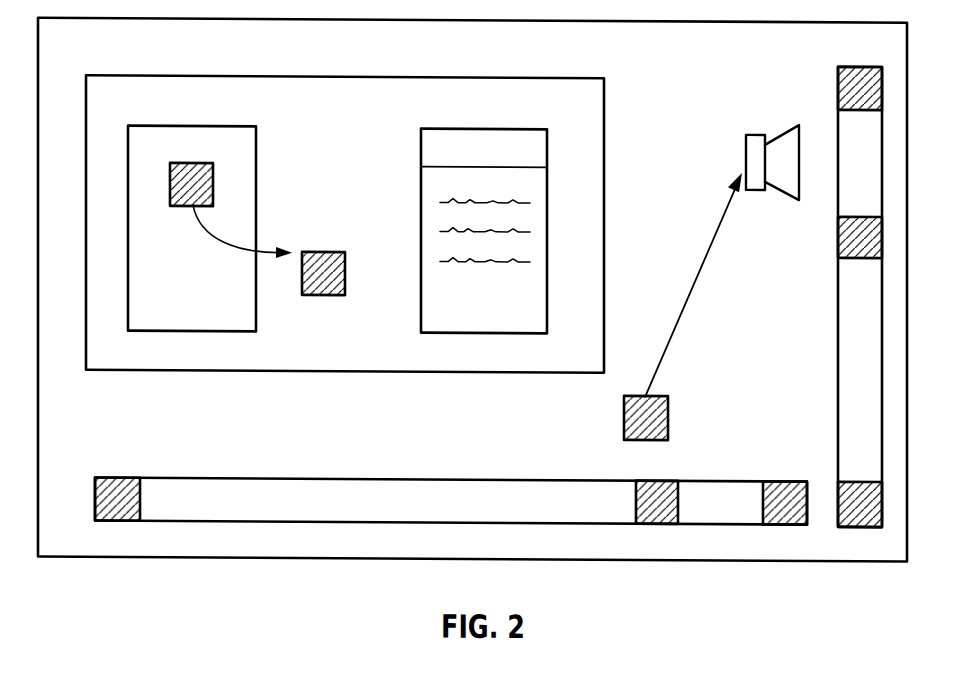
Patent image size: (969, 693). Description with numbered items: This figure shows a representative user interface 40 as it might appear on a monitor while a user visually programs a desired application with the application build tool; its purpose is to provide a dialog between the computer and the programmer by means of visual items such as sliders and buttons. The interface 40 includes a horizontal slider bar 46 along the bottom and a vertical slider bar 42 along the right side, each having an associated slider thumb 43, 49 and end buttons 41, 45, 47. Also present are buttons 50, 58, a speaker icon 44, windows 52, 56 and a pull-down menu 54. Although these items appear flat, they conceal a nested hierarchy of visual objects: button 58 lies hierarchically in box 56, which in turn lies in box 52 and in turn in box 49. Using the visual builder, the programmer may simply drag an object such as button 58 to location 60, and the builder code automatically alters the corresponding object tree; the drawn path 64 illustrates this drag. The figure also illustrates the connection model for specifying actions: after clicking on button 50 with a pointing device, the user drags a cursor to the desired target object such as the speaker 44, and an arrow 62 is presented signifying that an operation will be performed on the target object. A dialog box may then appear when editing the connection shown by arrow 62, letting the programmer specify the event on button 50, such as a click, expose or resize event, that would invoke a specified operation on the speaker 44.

The user interface 40 is at (197, 584).
The end button 41 is at (838, 80).
The slider bar 42 is at (853, 168).
The slider thumb 43 is at (838, 237).
The speaker icon 44 is at (788, 125).
The end button 45 is at (838, 485).
The slider bar 46 is at (368, 507).
The end button 47 is at (118, 522).
The slider thumb 49 is at (645, 52).
The button 50 is at (618, 419).
The window 52 is at (563, 113).
The pull-down menu 54 is at (501, 298).
The window 56 is at (198, 308).
The button 58 is at (190, 161).
The location 60 is at (323, 250).
The arrow 62 is at (688, 293).
The drag path arrow 64 is at (233, 247).